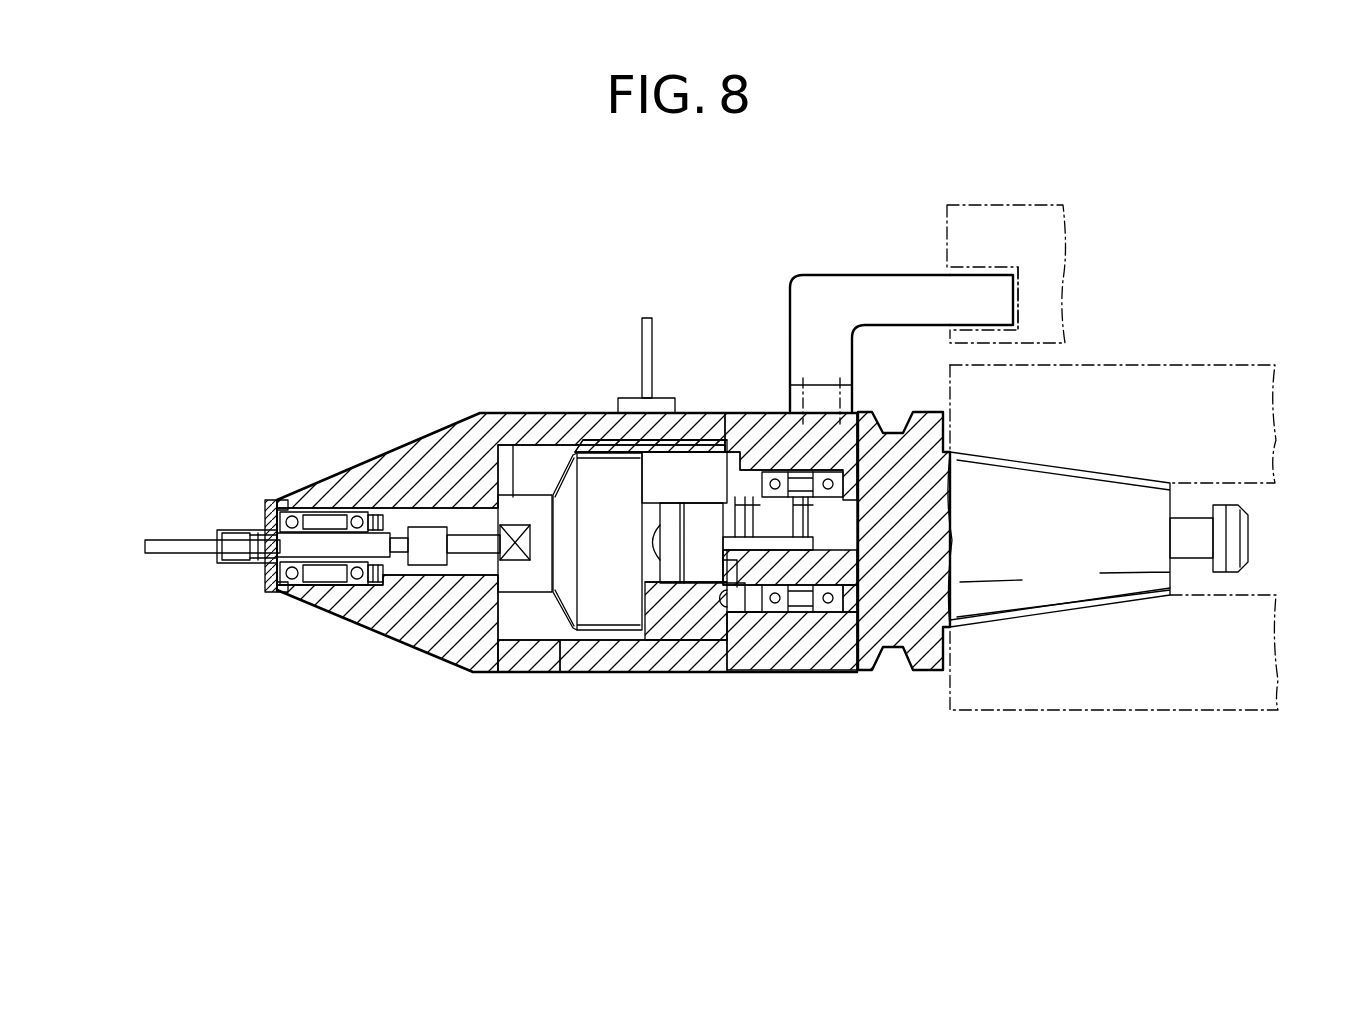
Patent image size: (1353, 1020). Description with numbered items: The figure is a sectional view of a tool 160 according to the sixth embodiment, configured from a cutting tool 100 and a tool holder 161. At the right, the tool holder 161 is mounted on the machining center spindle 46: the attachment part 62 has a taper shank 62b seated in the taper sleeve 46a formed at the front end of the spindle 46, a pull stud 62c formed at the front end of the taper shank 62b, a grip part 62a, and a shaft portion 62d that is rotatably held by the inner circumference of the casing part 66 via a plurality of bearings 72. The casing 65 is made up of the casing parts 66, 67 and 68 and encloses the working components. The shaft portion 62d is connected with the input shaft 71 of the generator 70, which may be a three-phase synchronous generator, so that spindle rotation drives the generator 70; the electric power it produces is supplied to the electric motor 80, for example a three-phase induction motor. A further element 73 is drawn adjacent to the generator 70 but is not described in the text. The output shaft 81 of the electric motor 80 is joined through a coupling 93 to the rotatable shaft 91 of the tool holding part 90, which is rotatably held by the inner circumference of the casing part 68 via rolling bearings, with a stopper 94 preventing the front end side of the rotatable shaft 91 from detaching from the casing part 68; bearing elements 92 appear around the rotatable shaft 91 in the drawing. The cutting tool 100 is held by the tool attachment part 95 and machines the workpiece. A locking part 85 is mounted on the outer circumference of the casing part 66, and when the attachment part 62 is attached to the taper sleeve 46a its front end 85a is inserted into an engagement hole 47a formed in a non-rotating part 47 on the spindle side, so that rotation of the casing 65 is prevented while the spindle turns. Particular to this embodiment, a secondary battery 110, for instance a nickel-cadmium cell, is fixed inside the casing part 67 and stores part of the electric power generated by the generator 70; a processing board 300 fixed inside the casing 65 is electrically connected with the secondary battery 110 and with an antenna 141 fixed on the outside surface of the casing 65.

The spindle 46 is at (1113, 574).
The taper sleeve 46a is at (1111, 596).
The non-rotating part 47 is at (1068, 248).
The engagement hole 47a is at (1020, 312).
The attachment part 62 is at (932, 672).
The grip part 62a is at (883, 660).
The taper shank 62b is at (1027, 620).
The pull stud 62c is at (1233, 543).
The shaft portion 62d is at (800, 578).
The casing 65 is at (588, 640).
The casing part 66 is at (742, 673).
The casing part 67 is at (597, 618).
The casing part 68 is at (472, 672).
The generator 70 is at (705, 575).
The input shaft 71 is at (670, 463).
The bearings 72 is at (765, 472).
The spacer 73 is at (715, 608).
The electric motor 80 is at (590, 665).
The output shaft 81 is at (513, 665).
The locking part 85 is at (880, 285).
The front end 85a is at (987, 293).
The tool holding part 90 is at (432, 734).
The rotatable shaft 91 is at (357, 548).
The bearing 92 is at (290, 583).
The coupling 93 is at (427, 555).
The stopper 94 is at (270, 592).
The tool attachment part 95 is at (225, 565).
The cutting tool 100 is at (165, 554).
The secondary battery 110 is at (613, 443).
The antenna 141 is at (655, 322).
The tool 160 is at (850, 862).
The tool holder 161 is at (895, 729).
The processing board 300 is at (567, 441).